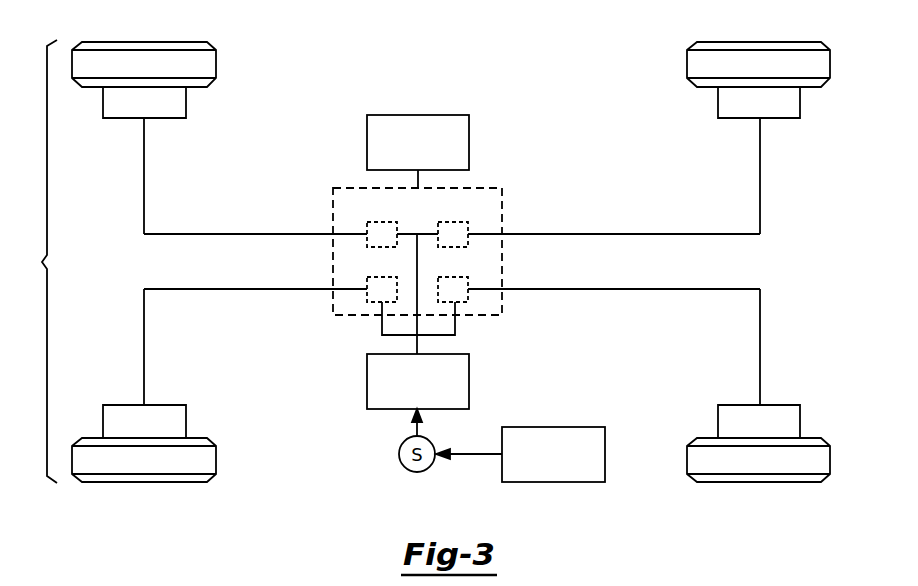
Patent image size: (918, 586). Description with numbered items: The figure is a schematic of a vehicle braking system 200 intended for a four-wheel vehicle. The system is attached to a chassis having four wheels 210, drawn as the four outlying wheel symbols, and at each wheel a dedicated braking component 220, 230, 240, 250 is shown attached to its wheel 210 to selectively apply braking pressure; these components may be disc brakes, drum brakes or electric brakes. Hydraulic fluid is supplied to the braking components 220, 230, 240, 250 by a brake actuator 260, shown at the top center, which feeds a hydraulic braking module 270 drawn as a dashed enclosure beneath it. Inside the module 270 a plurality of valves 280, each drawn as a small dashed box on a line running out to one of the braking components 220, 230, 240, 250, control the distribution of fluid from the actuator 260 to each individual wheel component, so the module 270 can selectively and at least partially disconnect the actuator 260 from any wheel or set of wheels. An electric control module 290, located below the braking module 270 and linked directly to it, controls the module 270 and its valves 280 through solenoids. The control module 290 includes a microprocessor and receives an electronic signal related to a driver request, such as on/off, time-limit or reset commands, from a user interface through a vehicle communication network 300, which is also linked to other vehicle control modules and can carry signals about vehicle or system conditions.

The vehicle braking system 200 is at (35, 261).
The wheels 210 is at (216, 66).
The braking component 220 is at (186, 103).
The braking component 230 is at (718, 103).
The braking component 240 is at (718, 421).
The braking component 250 is at (186, 421).
The brake actuator 260 is at (469, 143).
The hydraulic braking module 270 is at (502, 207).
The valves 280 is at (417, 262).
The electric control module 290 is at (469, 385).
The vehicle communication network 300 is at (550, 482).